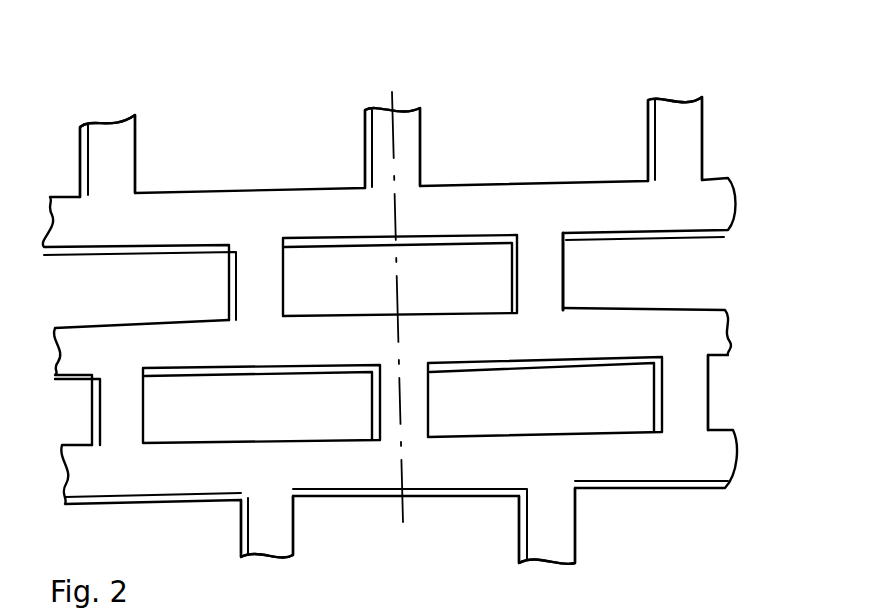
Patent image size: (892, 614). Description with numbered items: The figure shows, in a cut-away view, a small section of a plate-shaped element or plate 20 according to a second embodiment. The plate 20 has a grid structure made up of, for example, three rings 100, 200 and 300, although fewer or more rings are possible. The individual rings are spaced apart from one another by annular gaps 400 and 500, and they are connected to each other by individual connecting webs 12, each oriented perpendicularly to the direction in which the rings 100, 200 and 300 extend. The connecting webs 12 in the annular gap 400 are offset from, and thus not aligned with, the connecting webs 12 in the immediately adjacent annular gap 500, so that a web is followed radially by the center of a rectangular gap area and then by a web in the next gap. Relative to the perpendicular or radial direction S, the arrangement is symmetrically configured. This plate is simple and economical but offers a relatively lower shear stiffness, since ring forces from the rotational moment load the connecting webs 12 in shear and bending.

The connecting web 12 is at (125, 134).
The plate-shaped element 20 is at (545, 74).
The ring 100 is at (721, 467).
The ring 200 is at (732, 344).
The ring 300 is at (724, 202).
The annular gap 400 is at (735, 390).
The annular gap 500 is at (714, 268).
The perpendicular or radial direction S is at (392, 98).